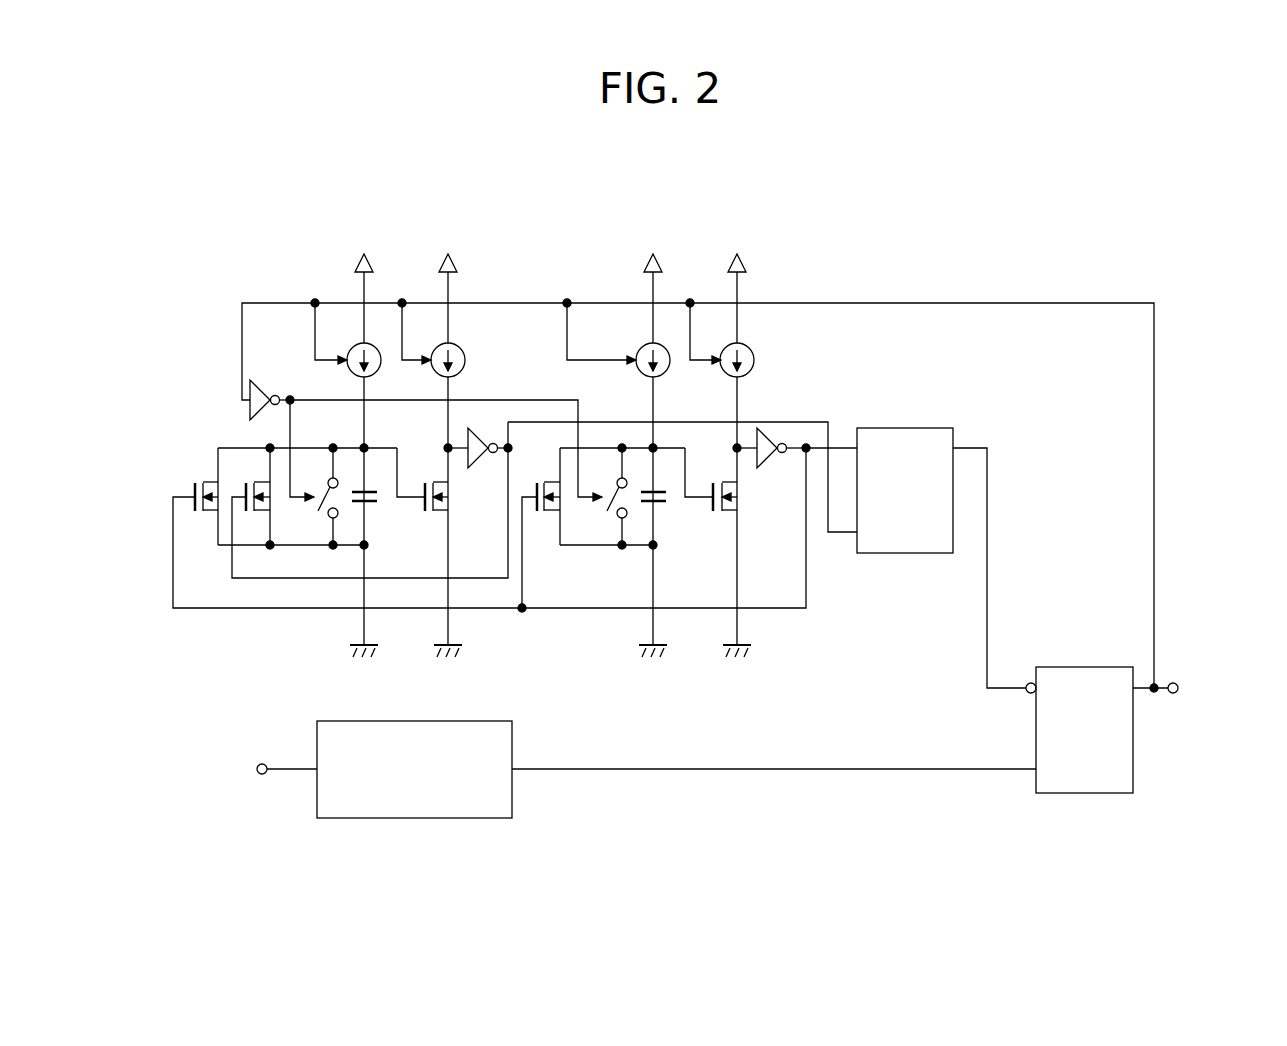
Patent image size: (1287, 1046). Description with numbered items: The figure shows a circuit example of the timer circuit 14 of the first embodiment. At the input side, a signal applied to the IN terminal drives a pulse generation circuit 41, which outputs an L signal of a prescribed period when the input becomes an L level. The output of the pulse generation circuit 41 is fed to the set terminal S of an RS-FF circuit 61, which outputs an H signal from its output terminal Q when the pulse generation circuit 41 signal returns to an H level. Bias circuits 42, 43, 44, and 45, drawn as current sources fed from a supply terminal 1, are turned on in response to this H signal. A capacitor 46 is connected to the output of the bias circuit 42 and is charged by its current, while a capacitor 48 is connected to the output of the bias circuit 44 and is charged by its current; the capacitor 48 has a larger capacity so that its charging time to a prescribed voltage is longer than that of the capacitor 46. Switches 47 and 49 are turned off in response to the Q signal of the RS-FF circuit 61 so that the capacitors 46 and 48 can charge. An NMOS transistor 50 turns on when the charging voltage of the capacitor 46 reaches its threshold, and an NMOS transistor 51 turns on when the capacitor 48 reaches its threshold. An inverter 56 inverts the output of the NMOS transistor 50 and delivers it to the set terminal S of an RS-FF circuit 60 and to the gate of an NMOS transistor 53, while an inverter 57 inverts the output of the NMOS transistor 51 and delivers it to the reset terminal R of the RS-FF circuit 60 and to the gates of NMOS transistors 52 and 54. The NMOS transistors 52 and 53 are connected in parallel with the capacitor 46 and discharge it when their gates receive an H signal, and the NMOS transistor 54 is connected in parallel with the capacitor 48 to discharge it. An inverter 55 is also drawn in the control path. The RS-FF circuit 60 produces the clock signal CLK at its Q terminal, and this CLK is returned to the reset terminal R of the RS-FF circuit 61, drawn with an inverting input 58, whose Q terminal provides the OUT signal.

The timer circuit 14 is at (683, 179).
The power supply terminal 1 is at (746, 268).
The pulse generation circuit 41 is at (513, 795).
The bias circuit 42 is at (379, 370).
The bias circuit 43 is at (463, 370).
The bias circuit 44 is at (668, 370).
The bias circuit 45 is at (752, 370).
The capacitor 46 is at (379, 500).
The switch 47 is at (323, 518).
The capacitor 48 is at (668, 503).
The switch 49 is at (612, 518).
The NMOS transistor 50 is at (441, 500).
The NMOS transistor 51 is at (737, 497).
The NMOS transistor 52 is at (203, 480).
The NMOS transistor 53 is at (258, 480).
The NMOS transistor 54 is at (545, 480).
The inverter 55 is at (262, 380).
The inverter 56 is at (466, 437).
The inverter 57 is at (768, 460).
The inverted reset input 58 is at (1007, 697).
The RS-FF circuit 60 is at (905, 553).
The RS-FF circuit 61 is at (1088, 793).